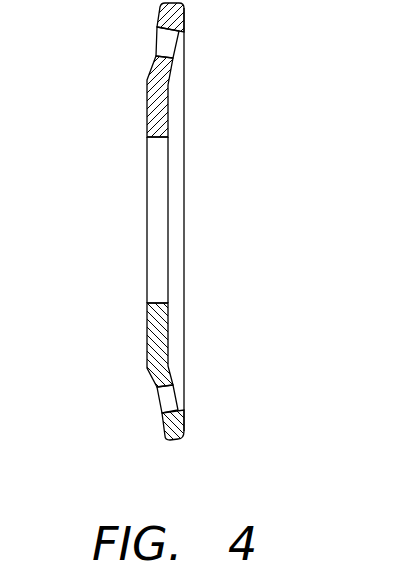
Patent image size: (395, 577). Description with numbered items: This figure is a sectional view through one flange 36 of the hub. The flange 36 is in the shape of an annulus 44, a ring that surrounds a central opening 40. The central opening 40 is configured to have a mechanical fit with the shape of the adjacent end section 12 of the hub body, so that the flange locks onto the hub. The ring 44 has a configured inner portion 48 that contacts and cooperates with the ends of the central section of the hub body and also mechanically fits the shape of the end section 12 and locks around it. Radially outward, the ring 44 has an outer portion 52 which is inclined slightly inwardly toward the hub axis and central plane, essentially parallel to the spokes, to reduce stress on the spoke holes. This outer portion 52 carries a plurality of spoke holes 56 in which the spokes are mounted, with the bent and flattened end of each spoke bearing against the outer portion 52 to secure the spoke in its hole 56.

The end section 12 is at (173, 116).
The flange 36 is at (112, 210).
The central opening 40 is at (158, 277).
The annulus 44 is at (182, 18).
The inner portion 48 is at (163, 323).
The outer portion 52 is at (166, 433).
The spoke holes 56 is at (167, 399).